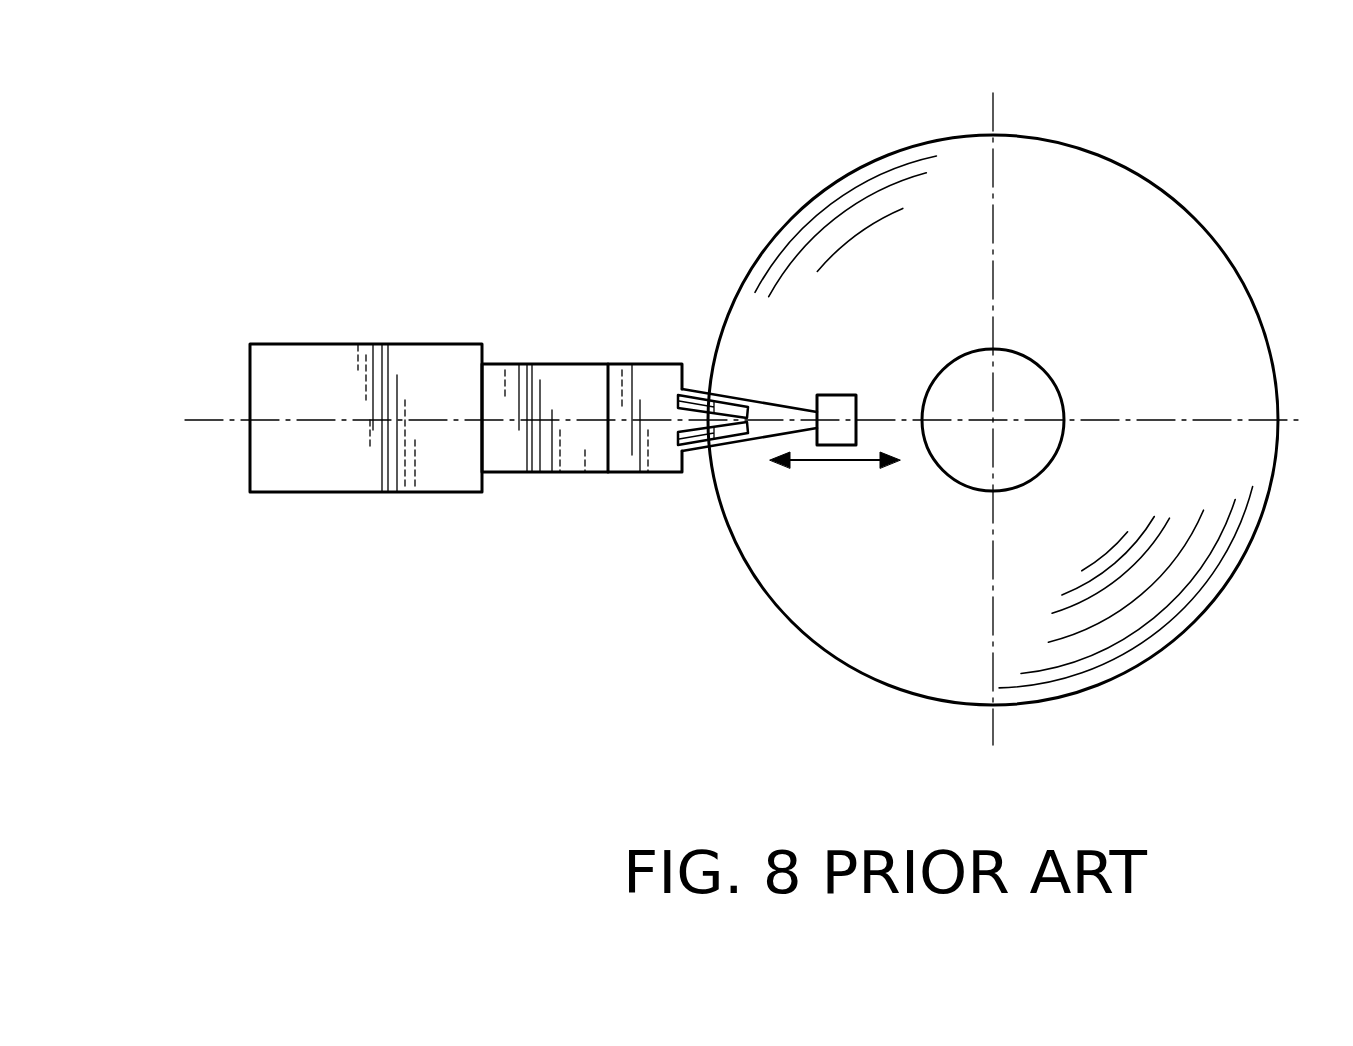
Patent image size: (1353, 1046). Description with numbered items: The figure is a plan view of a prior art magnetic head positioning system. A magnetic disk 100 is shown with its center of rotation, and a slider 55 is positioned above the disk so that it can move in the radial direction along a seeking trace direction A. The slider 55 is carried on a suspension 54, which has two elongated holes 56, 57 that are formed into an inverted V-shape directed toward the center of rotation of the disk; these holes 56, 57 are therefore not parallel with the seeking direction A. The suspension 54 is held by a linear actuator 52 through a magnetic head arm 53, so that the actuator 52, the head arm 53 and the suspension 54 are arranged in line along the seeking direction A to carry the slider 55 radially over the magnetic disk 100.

The linear actuator 52 is at (412, 357).
The magnetic head arm 53 is at (587, 472).
The suspension 54 is at (650, 363).
The slider 55 is at (830, 395).
The elongated hole 56 is at (692, 387).
The elongated hole 57 is at (712, 450).
The magnetic disk 100 is at (1092, 185).
The seeking trace direction A is at (850, 463).